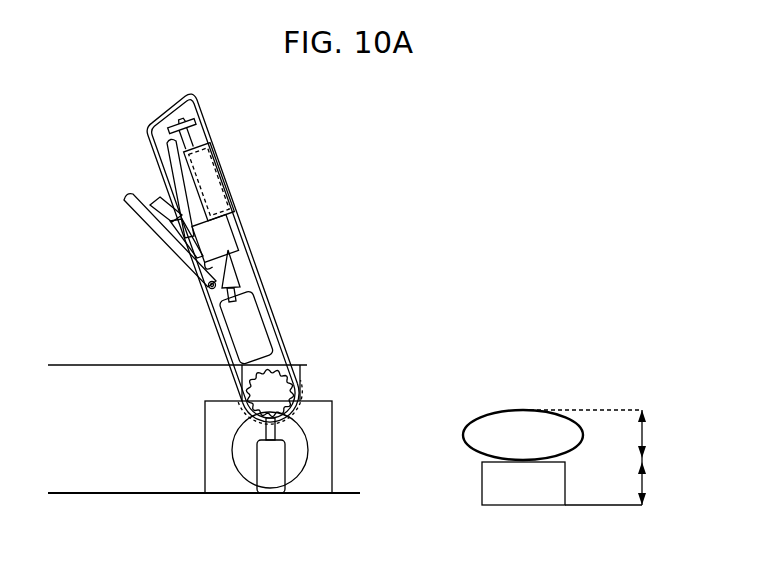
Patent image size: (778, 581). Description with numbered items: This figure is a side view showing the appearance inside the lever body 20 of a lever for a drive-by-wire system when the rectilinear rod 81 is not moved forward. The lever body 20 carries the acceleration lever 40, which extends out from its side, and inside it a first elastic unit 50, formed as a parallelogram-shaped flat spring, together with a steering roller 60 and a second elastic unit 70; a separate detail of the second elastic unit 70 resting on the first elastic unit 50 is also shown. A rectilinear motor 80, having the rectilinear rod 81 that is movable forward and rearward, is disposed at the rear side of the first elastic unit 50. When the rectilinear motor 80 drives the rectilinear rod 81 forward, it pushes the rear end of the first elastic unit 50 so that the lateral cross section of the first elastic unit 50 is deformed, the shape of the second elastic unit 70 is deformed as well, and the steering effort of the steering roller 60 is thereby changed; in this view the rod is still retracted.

The lever body 20 is at (258, 247).
The acceleration lever 40 is at (136, 210).
The first elastic unit 50 is at (154, 145).
The steering roller 60 is at (238, 190).
The second elastic unit 70 is at (210, 158).
The rectilinear motor 80 is at (253, 333).
The rectilinear rod 81 is at (240, 300).